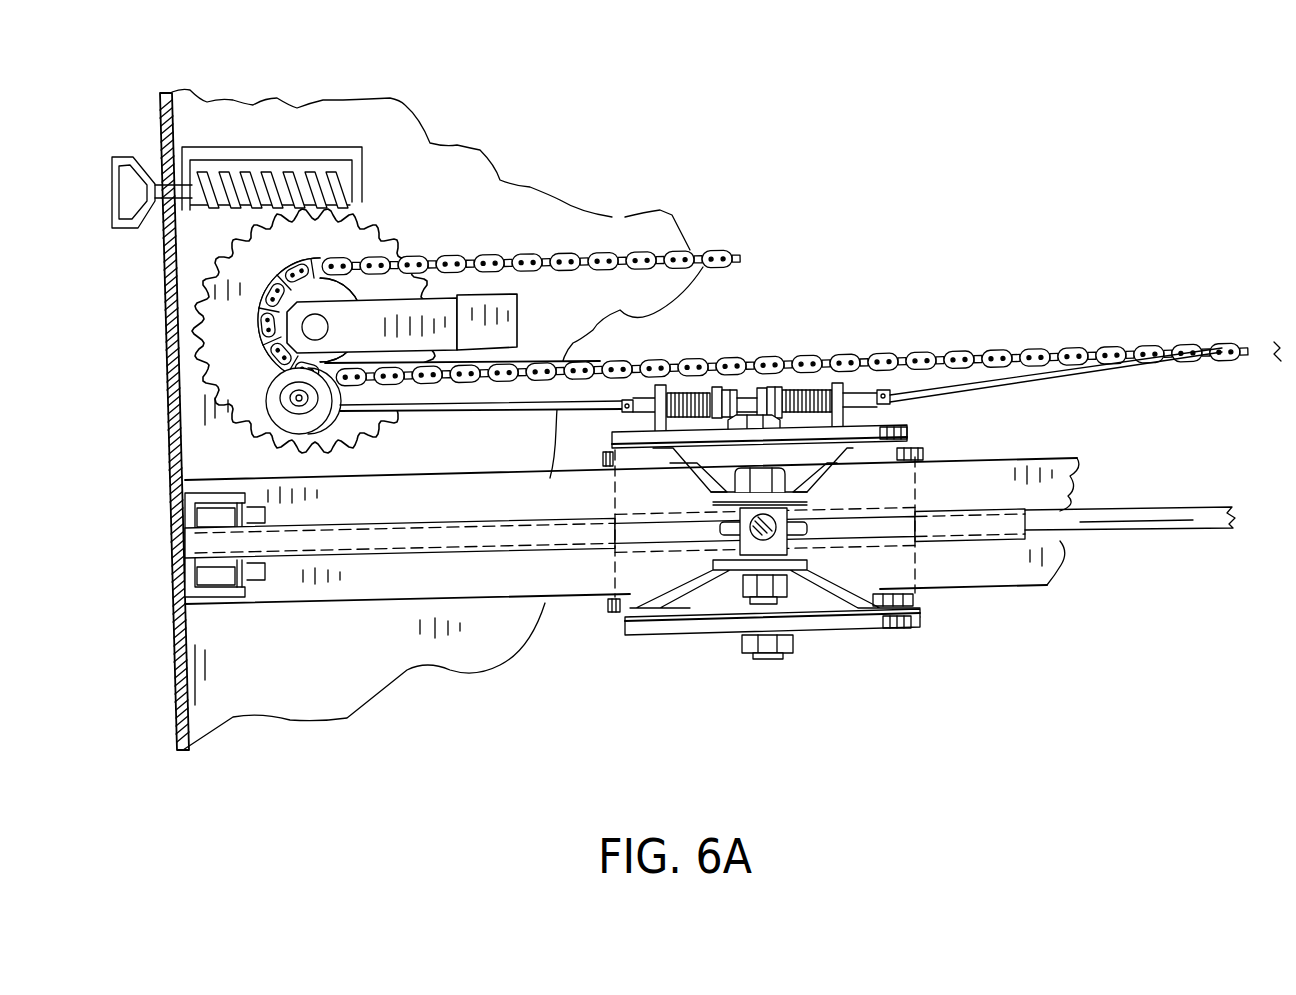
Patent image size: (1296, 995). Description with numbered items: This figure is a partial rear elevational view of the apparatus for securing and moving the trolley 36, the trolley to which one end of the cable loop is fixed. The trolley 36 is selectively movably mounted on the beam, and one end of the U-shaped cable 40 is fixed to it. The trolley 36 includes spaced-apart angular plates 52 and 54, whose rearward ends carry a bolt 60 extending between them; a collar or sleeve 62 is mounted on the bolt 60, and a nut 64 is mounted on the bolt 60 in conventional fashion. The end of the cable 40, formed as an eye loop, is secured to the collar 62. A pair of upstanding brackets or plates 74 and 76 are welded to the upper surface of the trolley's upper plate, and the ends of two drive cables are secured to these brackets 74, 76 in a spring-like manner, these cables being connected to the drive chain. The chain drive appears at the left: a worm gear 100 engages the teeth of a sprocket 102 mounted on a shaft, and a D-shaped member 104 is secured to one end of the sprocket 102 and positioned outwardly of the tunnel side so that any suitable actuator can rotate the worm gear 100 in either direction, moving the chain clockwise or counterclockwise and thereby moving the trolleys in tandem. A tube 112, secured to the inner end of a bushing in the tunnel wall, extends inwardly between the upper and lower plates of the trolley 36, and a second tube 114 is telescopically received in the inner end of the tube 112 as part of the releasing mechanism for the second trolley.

The trolley 36 is at (950, 410).
The U-shaped cable 40 is at (622, 612).
The angular plate 52 is at (927, 442).
The angular plate 54 is at (722, 622).
The bolt 60 is at (782, 607).
The collar or sleeve 62 is at (790, 545).
The nut 64 is at (800, 592).
The upstanding bracket or plate 74 is at (670, 387).
The upstanding bracket or plate 76 is at (836, 383).
The worm gear 100 is at (297, 172).
The sprocket 102 is at (220, 332).
The D-shaped member 104 is at (113, 183).
The tube 112 is at (505, 548).
The tube 114 is at (1165, 515).